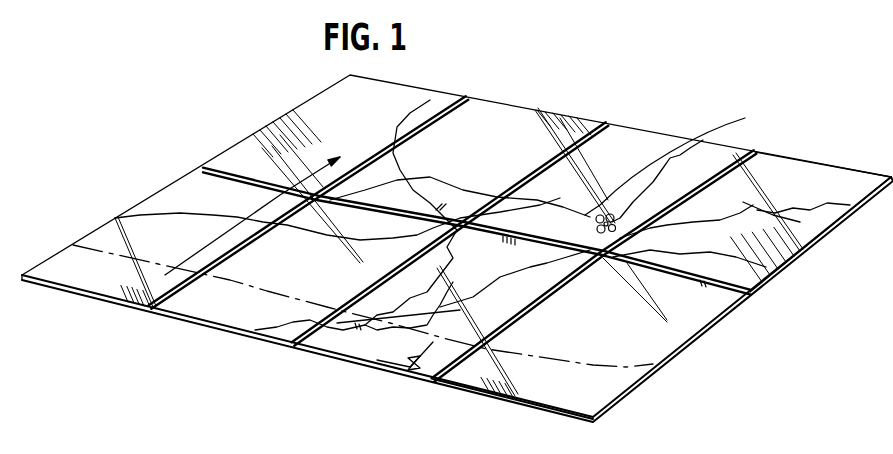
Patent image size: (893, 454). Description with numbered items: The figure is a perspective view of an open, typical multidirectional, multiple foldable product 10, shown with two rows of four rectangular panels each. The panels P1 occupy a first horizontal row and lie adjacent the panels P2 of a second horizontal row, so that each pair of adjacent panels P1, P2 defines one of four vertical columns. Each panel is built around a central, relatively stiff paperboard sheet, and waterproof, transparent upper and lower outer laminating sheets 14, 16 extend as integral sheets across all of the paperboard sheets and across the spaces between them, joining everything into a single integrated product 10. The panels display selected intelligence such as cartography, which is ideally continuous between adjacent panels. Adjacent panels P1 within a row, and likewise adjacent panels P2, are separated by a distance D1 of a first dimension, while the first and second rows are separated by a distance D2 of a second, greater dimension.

The multidirectional, multiple foldable product 10 is at (775, 284).
The upper outer laminating sheet 14 is at (830, 187).
The lower outer laminating sheet 16 is at (535, 410).
The distance between adjacent panels in a row D1 is at (648, 88).
The distance between the first and second rows D2 is at (748, 292).
The panel in first horizontal row P1 is at (427, 107).
The panel in second horizontal row P2 is at (183, 173).